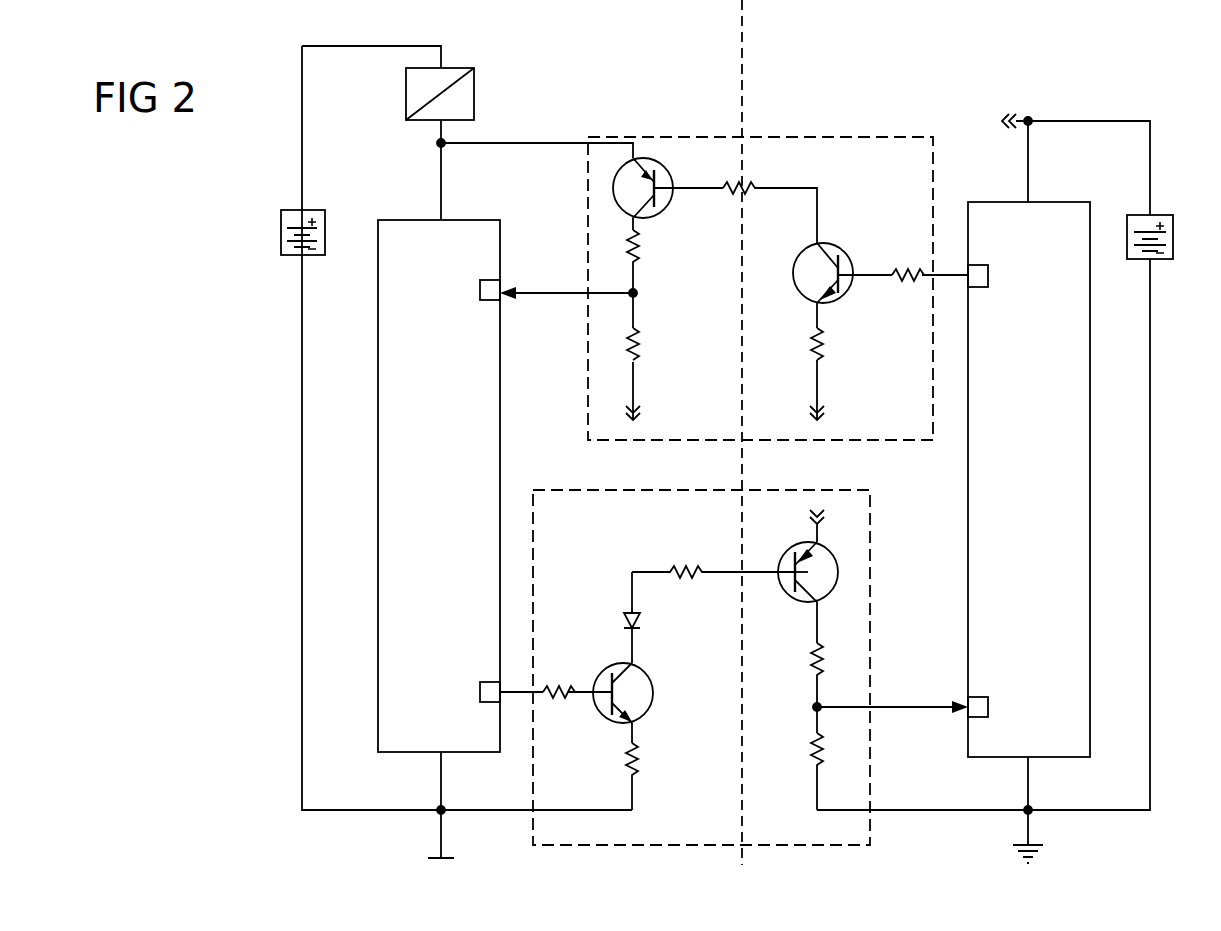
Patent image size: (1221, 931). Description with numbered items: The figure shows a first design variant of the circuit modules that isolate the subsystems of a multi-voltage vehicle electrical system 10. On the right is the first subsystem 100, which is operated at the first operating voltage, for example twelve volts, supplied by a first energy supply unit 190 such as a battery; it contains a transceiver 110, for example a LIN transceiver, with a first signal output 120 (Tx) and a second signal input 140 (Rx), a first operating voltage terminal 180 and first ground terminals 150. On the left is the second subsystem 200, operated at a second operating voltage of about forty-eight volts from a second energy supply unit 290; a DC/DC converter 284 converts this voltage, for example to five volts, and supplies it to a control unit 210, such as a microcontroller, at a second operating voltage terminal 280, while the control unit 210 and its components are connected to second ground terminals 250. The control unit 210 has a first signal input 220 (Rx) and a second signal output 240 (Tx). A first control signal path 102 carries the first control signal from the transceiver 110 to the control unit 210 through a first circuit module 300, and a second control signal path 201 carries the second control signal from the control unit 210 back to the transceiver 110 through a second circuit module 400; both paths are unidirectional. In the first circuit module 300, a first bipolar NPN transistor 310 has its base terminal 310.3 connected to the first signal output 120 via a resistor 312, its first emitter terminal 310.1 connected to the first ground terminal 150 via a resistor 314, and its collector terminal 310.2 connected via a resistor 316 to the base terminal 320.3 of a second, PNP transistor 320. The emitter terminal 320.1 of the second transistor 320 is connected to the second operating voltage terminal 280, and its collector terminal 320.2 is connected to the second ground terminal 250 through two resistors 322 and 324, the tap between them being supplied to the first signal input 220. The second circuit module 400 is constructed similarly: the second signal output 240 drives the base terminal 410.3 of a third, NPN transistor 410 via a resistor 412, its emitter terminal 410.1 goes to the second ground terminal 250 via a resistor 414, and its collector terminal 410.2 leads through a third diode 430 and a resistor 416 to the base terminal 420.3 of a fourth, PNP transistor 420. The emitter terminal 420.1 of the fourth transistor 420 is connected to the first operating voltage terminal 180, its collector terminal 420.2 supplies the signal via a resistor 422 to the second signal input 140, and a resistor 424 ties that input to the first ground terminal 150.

The multi-voltage vehicle electrical system 10 is at (270, 68).
The first subsystem 100 is at (1118, 50).
The first control signal path 102 is at (547, 290).
The transceiver 110 is at (1080, 200).
The first signal output 120 is at (990, 275).
The second signal input 140 is at (988, 697).
The first ground terminal 150 is at (1042, 851).
The first operating voltage terminal 180 is at (1008, 110).
The first energy supply unit 190 is at (1165, 215).
The second subsystem 200 is at (536, 36).
The second control signal path 201 is at (515, 690).
The control unit 210 is at (495, 218).
The first signal input 220 is at (480, 285).
The second signal output 240 is at (482, 680).
The second ground terminal 250 is at (436, 856).
The second operating voltage terminal 280 is at (436, 146).
The DC/DC converter 284 is at (478, 90).
The second energy supply unit 290 is at (282, 257).
The first circuit module 300 is at (923, 164).
The first bipolar transistor 310 is at (826, 251).
The first emitter terminal 310.1 is at (826, 300).
The collector terminal 310.2 is at (812, 262).
The base terminal 310.3 is at (846, 262).
The resistor 312 is at (908, 270).
The resistor 314 is at (830, 346).
The resistor 316 is at (750, 186).
The second transistor 320 is at (656, 169).
The emitter terminal 320.1 is at (636, 168).
The collector terminal 320.2 is at (640, 211).
The base terminal 320.3 is at (661, 183).
The resistor 322 is at (644, 256).
The resistor 324 is at (645, 341).
The second circuit module 400 is at (600, 526).
The third bipolar transistor 410 is at (641, 681).
The emitter terminal 410.1 is at (606, 702).
The collector terminal 410.2 is at (634, 670).
The base terminal 410.3 is at (641, 720).
The resistor 412 is at (558, 683).
The resistor 414 is at (626, 771).
The resistor 416 is at (680, 565).
The fourth bipolar transistor 420 is at (835, 573).
The emitter terminal 420.1 is at (806, 552).
The collector terminal 420.2 is at (812, 601).
The base terminal 420.3 is at (790, 596).
The resistor 422 is at (816, 673).
The resistor 424 is at (812, 756).
The third diode 430 is at (625, 615).